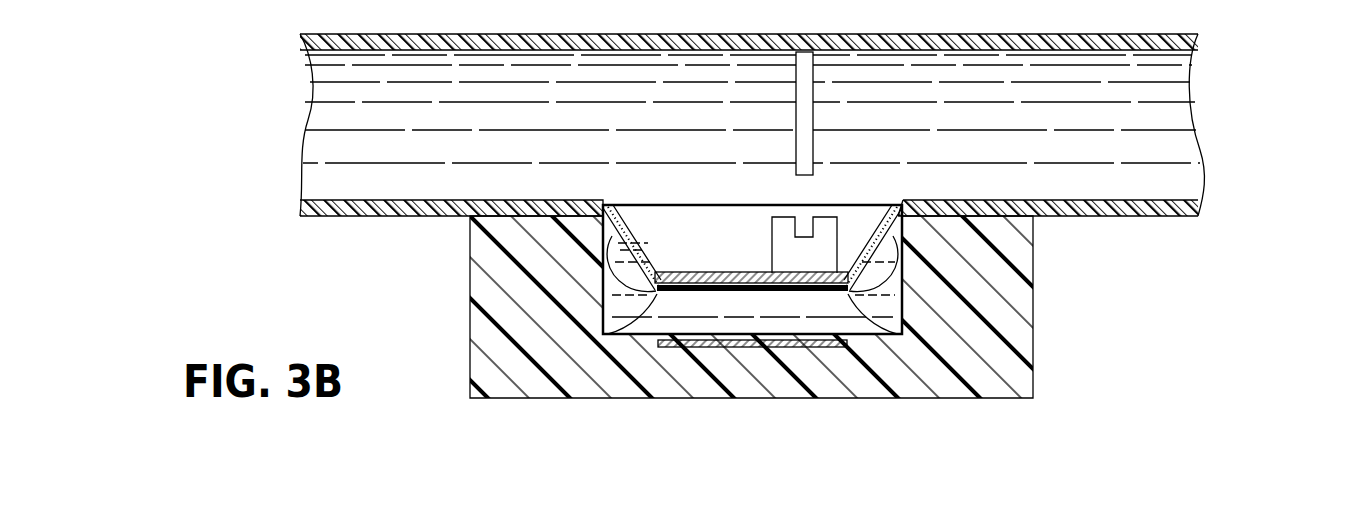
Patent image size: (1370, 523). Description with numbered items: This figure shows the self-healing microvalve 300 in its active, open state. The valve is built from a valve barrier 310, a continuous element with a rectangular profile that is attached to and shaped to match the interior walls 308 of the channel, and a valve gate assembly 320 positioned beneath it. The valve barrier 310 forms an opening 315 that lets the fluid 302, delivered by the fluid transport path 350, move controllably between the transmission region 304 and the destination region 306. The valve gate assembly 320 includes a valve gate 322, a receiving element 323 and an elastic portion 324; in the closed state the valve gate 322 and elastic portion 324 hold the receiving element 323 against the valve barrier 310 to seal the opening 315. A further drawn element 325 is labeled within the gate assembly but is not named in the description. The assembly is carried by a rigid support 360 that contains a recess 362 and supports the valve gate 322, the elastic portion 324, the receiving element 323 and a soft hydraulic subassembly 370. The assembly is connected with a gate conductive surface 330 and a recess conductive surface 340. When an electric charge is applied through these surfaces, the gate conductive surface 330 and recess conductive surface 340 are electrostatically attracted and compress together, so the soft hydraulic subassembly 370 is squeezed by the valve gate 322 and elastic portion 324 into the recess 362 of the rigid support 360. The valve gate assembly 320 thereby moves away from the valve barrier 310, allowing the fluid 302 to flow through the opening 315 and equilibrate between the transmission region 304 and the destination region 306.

The self-healing microvalve 300 is at (265, 40).
The fluid 302 is at (342, 122).
The transmission region 304 is at (331, 187).
The destination region 306 is at (1180, 147).
The interior walls 308 is at (1120, 43).
The valve barrier 310 is at (831, 88).
The opening 315 is at (824, 196).
The valve gate assembly 320 is at (908, 230).
The valve gate 322 is at (848, 327).
The receiving element 323 is at (782, 220).
The elastic portion 324 is at (612, 238).
The sensor substrate 325 is at (757, 272).
The gate conductive surface 330 is at (643, 284).
The recess conductive surface 340 is at (687, 346).
The fluid transport path 350 is at (345, 86).
The rigid support 360 is at (497, 295).
The recess 362 is at (905, 312).
The soft hydraulic subassembly 370 is at (855, 327).